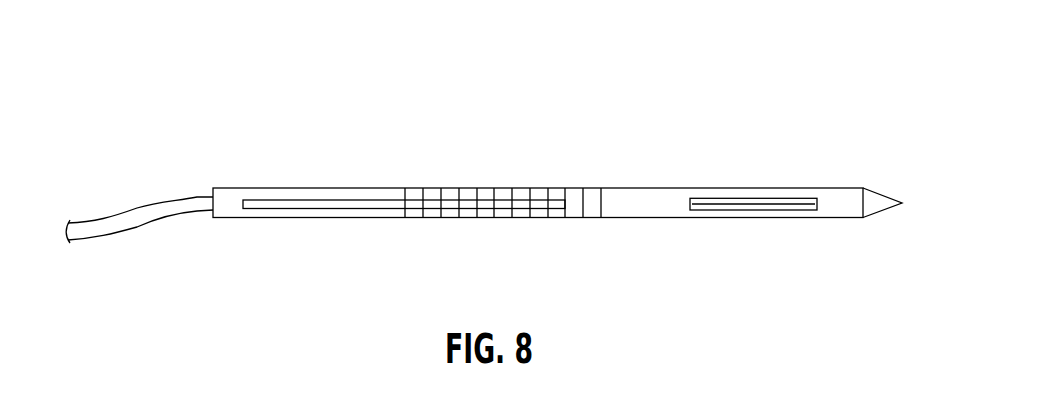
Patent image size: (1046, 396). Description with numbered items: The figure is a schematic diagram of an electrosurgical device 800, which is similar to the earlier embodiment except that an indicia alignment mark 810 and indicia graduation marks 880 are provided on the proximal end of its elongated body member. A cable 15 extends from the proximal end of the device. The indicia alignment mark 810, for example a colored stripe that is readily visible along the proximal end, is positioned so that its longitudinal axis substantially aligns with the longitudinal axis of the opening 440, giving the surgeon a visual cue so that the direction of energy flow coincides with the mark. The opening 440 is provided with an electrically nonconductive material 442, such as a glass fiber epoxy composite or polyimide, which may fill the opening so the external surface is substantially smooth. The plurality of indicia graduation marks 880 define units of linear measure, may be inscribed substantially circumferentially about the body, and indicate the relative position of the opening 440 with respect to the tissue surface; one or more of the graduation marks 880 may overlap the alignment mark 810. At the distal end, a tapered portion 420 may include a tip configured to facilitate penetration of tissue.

The electrosurgical device 800 is at (636, 51).
The cable 15 is at (157, 203).
The indicia alignment mark 810 is at (330, 210).
The indicia graduation marks 880 is at (526, 186).
The electrically nonconductive material 442 is at (753, 202).
The opening 440 is at (728, 204).
The tapered portion 420 is at (883, 213).